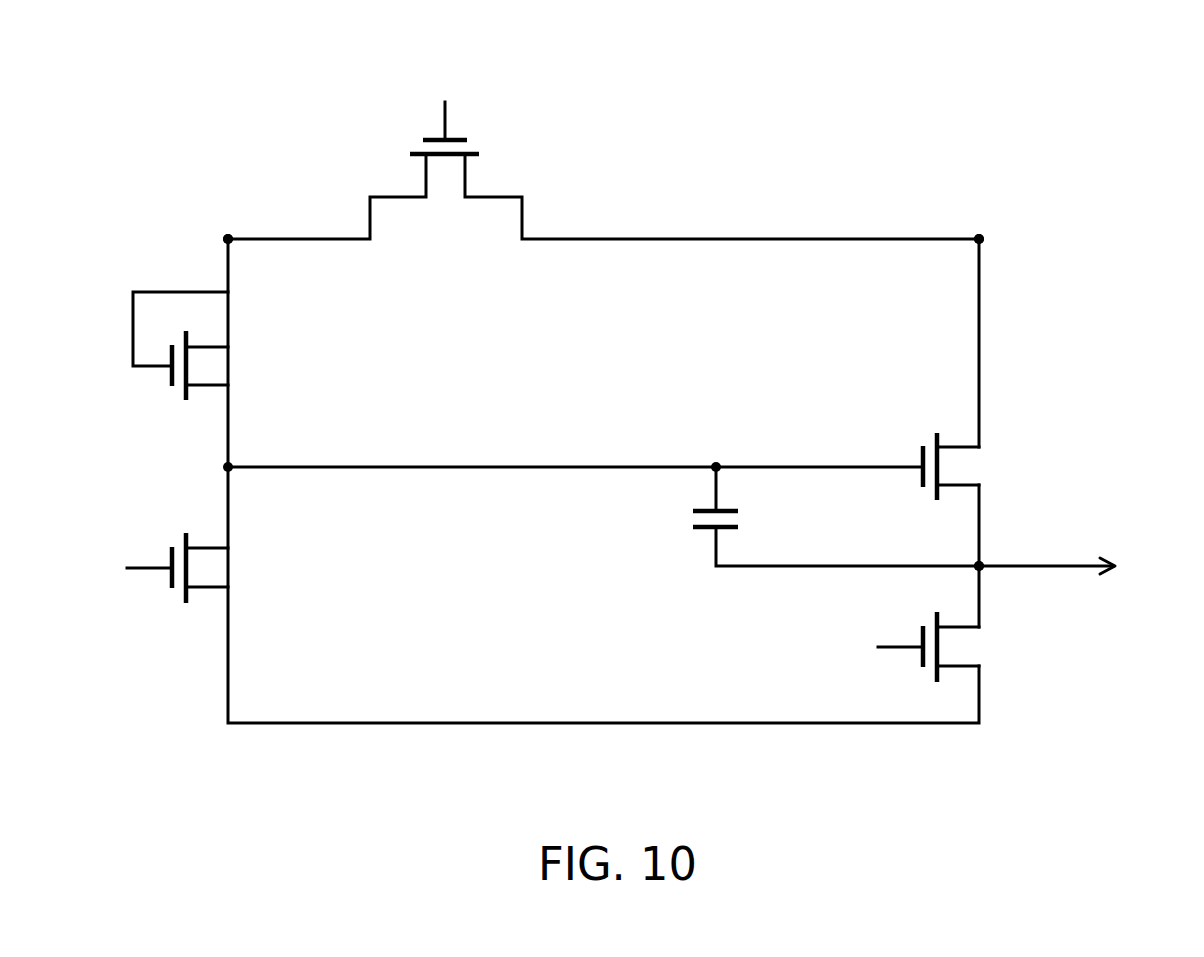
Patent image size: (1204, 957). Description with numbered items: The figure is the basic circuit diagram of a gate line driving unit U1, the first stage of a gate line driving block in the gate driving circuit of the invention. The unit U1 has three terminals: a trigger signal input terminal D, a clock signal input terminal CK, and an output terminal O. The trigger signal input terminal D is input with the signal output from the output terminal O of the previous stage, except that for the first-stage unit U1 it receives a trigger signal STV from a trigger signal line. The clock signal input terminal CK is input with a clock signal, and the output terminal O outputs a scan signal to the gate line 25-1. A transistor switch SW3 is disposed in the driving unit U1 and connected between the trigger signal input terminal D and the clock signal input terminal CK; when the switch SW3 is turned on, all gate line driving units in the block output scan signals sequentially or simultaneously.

The gate line 25-1 is at (1089, 561).
The transistor switch SW3 is at (444, 106).
The trigger signal input terminal D is at (228, 239).
The clock signal input terminal CK is at (979, 239).
The output terminal O is at (979, 566).
The gate line driving unit U1 is at (663, 380).